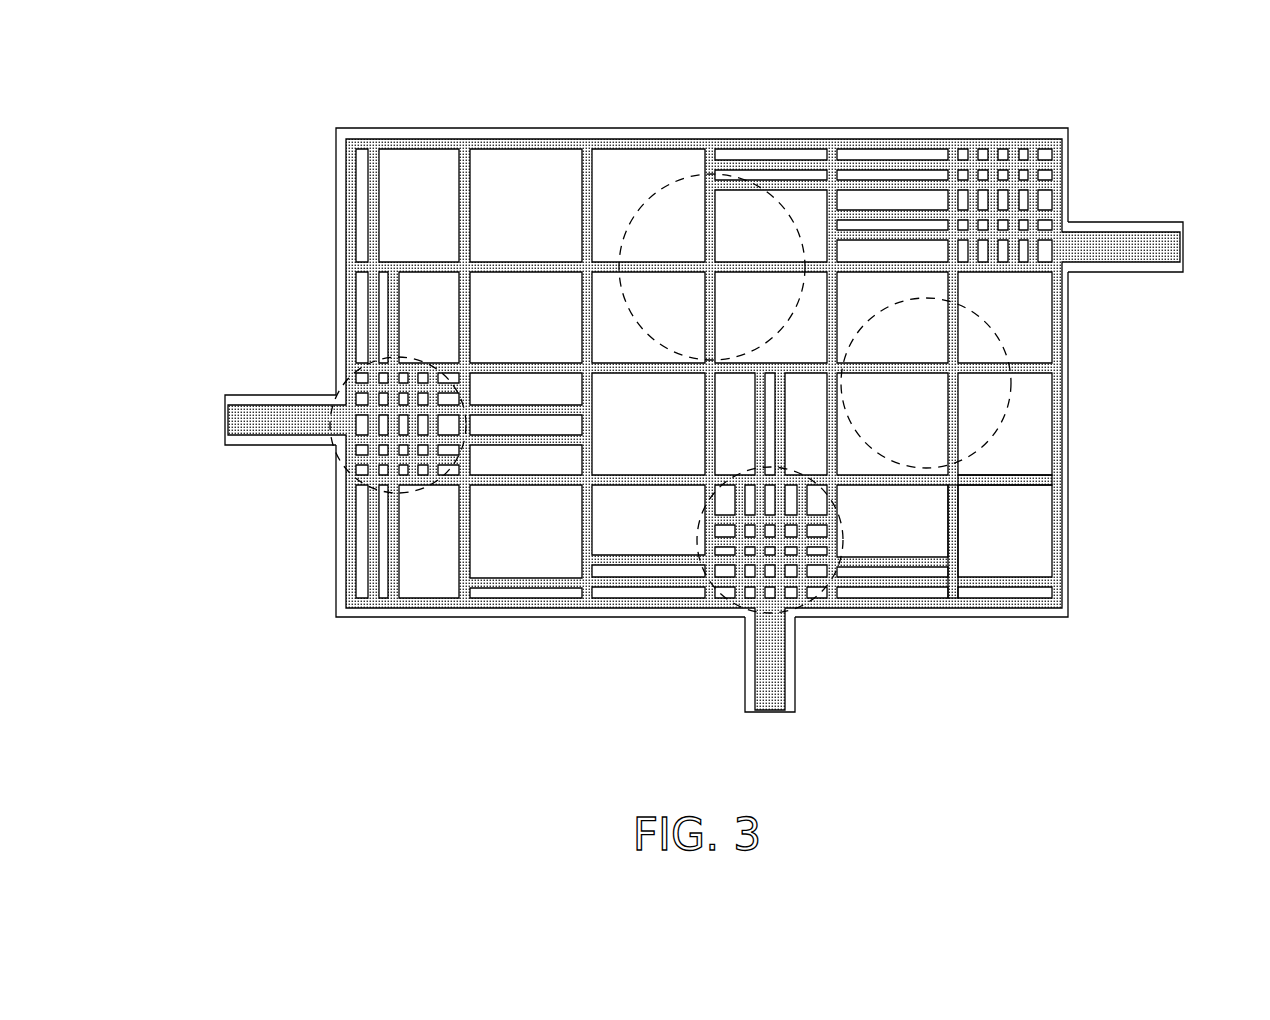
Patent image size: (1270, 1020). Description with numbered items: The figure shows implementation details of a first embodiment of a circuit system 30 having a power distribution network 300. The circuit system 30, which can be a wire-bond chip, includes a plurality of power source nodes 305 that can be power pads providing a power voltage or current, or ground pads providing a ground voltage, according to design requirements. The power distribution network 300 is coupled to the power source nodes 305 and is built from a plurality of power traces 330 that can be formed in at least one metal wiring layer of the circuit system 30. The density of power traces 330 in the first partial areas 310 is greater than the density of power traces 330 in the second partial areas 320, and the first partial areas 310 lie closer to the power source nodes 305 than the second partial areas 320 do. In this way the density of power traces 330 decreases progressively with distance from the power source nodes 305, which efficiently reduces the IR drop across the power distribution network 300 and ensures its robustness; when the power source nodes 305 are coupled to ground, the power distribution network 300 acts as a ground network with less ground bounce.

The circuit system 30 is at (928, 128).
The power distribution network 300 is at (520, 178).
The power source nodes 305 is at (232, 425).
The first partial areas 310 is at (434, 500).
The second partial areas 320 is at (904, 296).
The power traces 330 is at (1014, 490).